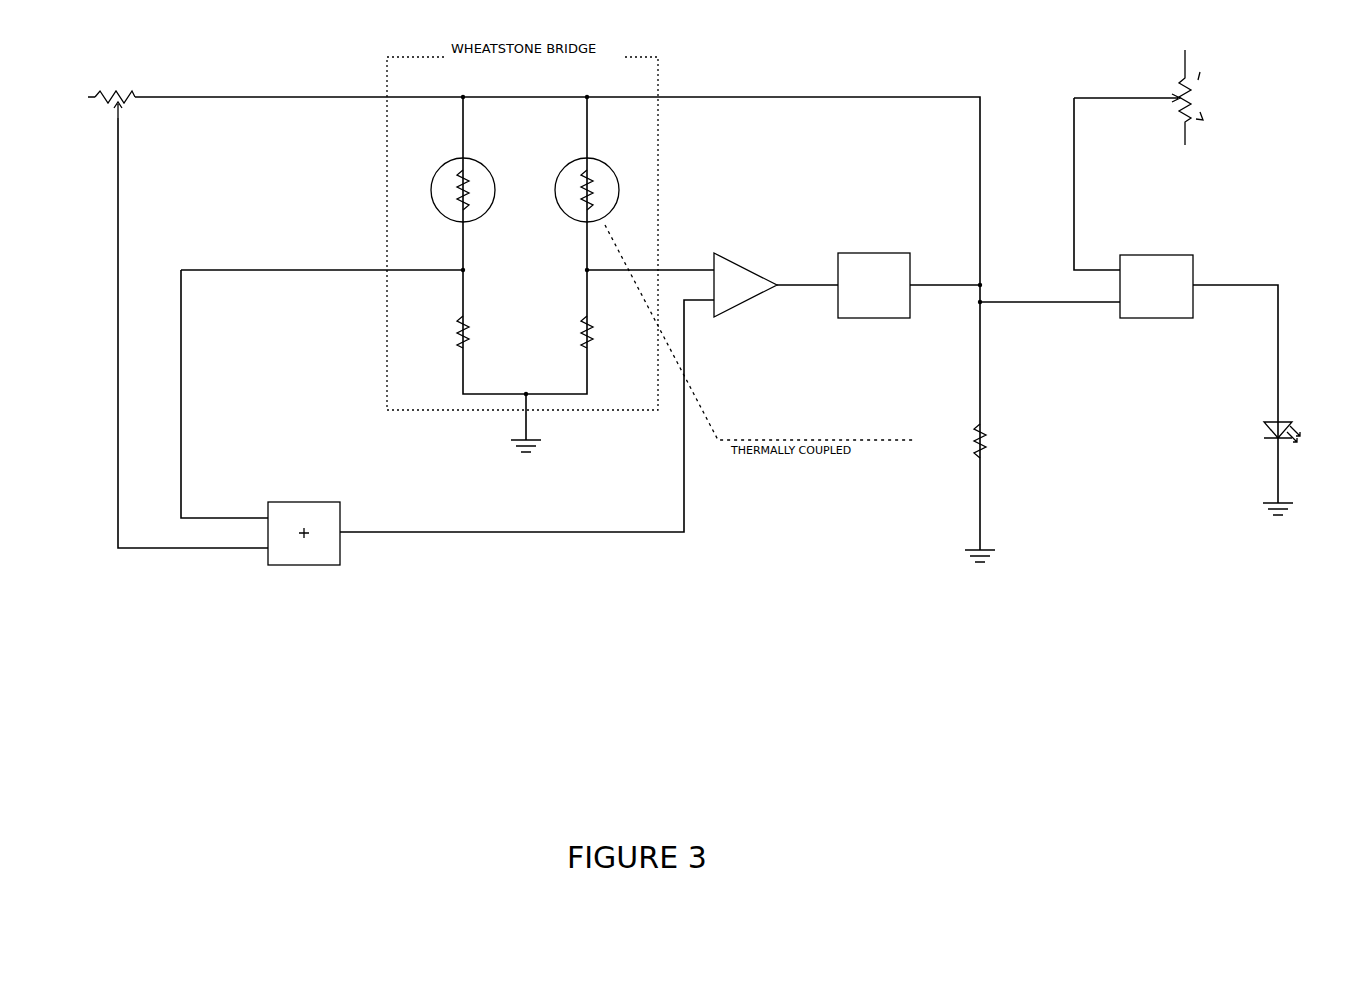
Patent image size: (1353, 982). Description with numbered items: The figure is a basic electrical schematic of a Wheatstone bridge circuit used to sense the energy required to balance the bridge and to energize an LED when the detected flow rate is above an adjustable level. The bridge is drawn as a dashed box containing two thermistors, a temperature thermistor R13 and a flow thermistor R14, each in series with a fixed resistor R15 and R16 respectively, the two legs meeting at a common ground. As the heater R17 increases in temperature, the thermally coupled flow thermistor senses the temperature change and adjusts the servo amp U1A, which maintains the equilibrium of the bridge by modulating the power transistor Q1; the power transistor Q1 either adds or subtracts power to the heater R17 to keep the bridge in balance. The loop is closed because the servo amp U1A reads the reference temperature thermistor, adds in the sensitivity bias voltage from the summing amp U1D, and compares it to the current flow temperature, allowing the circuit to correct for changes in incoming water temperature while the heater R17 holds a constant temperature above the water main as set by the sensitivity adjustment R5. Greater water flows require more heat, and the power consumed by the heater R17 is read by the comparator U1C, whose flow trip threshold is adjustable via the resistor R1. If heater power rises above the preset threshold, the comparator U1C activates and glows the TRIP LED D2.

The sensitivity adjustment R5 is at (117, 101).
The temperature thermistor R13 is at (446, 191).
The flow thermistor R14 is at (601, 187).
The bridge resistor R15 is at (463, 332).
The bridge resistor R16 is at (588, 332).
The heater R17 is at (968, 441).
The servo amp U1A is at (771, 307).
The power transistor Q1 is at (874, 285).
The sensitivity bias voltage U1D is at (304, 542).
The resistor R1 is at (1166, 95).
The comparator U1C is at (1152, 296).
The TRIP LED D2 is at (1298, 426).